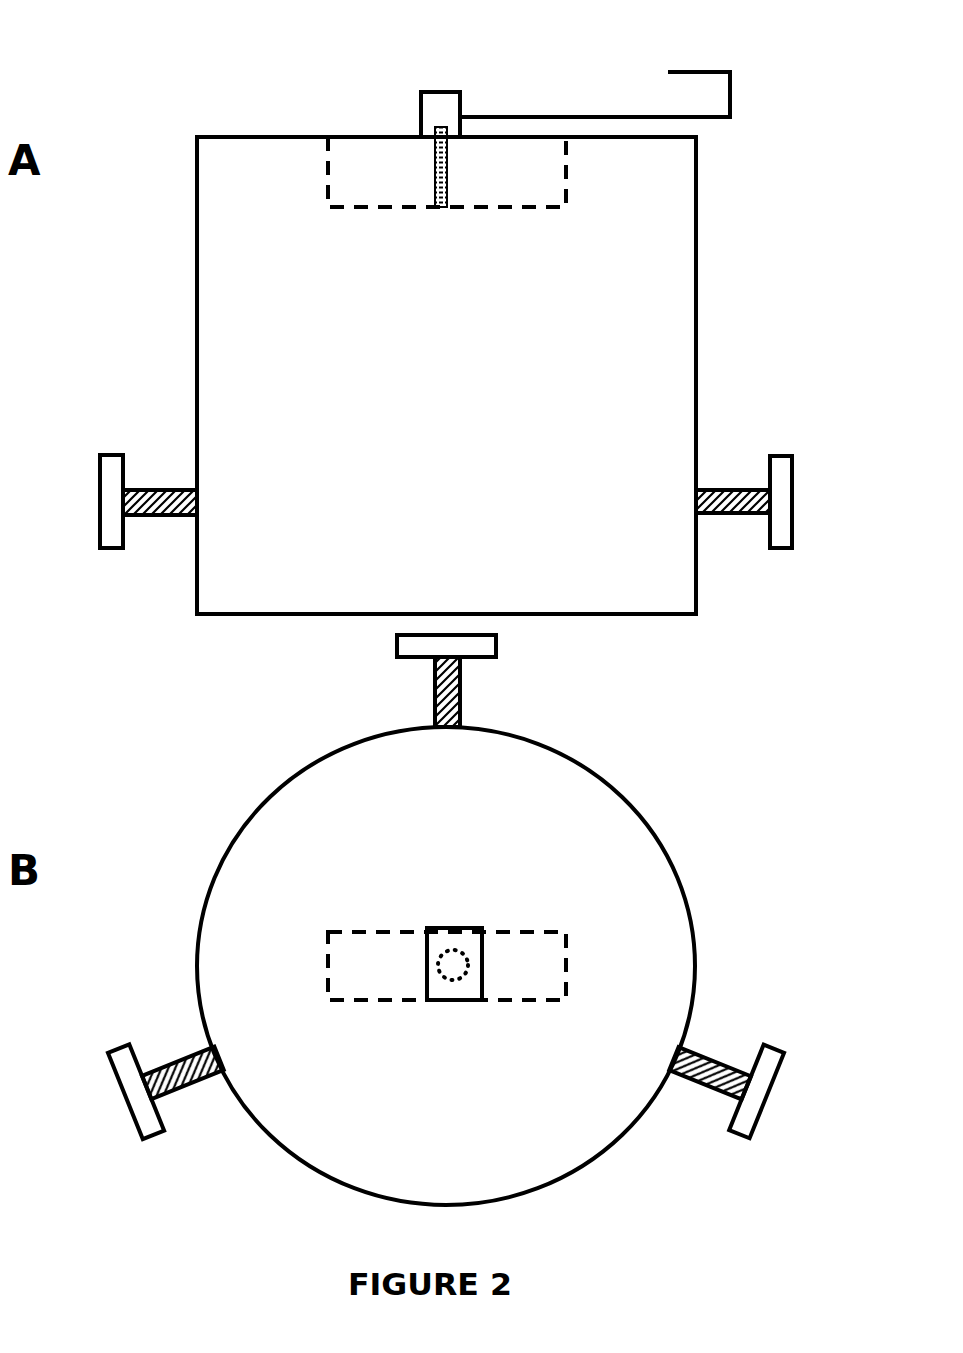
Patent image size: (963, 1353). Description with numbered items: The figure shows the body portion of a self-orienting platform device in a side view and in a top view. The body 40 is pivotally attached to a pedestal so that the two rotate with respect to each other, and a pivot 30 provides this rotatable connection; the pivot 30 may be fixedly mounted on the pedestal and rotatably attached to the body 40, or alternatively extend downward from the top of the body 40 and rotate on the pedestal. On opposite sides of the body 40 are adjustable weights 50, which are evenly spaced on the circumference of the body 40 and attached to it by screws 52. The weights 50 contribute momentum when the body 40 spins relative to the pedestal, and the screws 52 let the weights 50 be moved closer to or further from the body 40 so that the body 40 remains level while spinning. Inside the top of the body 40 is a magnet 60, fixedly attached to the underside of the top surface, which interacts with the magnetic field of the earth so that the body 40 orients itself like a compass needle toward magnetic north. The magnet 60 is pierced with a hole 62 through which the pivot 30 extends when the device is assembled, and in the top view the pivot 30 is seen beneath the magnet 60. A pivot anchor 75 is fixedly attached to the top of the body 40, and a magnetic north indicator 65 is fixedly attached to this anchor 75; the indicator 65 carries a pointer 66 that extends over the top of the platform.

In FIG. 2B, the pivot 30 is at (448, 967).
In FIG. 2A, the body 40 is at (683, 339).
In FIG. 2B, the body 40 is at (640, 812).
In FIG. 2A, the adjustable weights 50 is at (793, 480).
In FIG. 2B, the adjustable weights 50 is at (780, 1050).
In FIG. 2A, the screws 52 is at (718, 490).
In FIG. 2B, the screws 52 is at (712, 1057).
In FIG. 2A, the magnet 60 is at (522, 178).
In FIG. 2B, the magnet 60 is at (566, 952).
In FIG. 2A, the hole 62 is at (435, 187).
In FIG. 2A, the magnetic north indicator 65 is at (730, 98).
In FIG. 2A, the pointer 66 is at (712, 72).
In FIG. 2A, the pivot anchor 75 is at (460, 95).
In FIG. 2B, the pivot anchor 75 is at (440, 945).